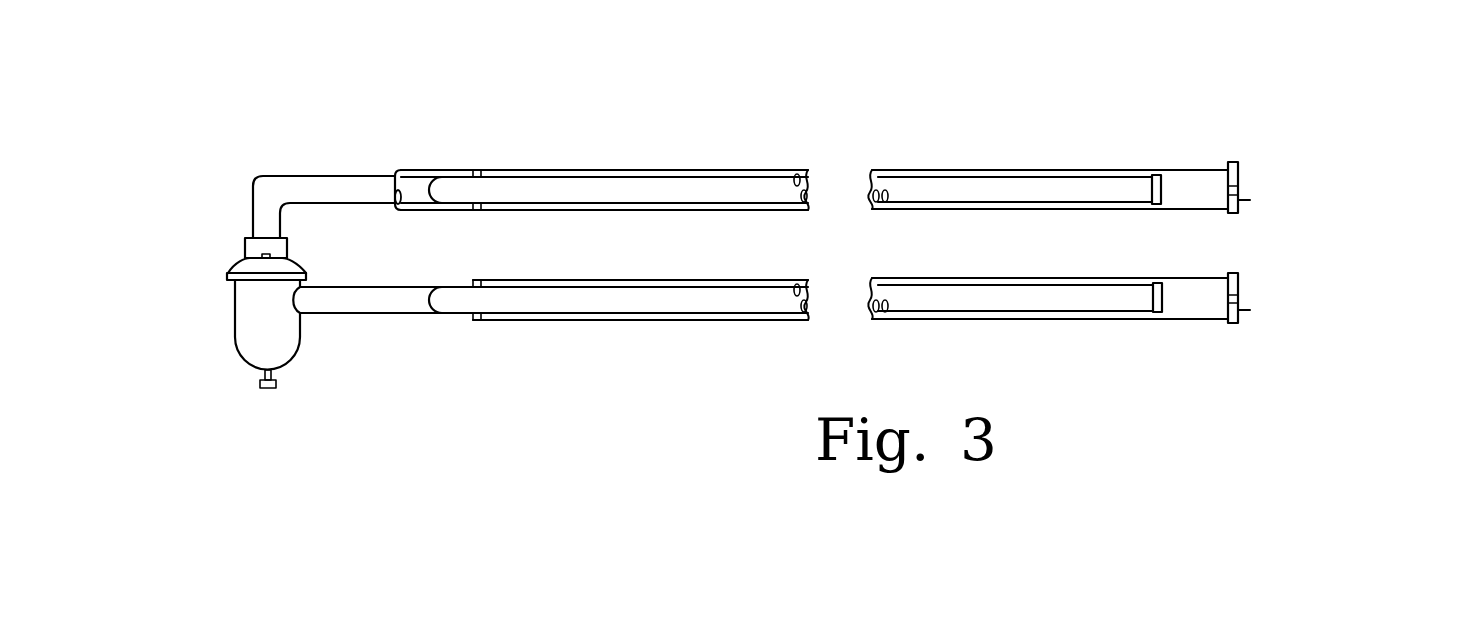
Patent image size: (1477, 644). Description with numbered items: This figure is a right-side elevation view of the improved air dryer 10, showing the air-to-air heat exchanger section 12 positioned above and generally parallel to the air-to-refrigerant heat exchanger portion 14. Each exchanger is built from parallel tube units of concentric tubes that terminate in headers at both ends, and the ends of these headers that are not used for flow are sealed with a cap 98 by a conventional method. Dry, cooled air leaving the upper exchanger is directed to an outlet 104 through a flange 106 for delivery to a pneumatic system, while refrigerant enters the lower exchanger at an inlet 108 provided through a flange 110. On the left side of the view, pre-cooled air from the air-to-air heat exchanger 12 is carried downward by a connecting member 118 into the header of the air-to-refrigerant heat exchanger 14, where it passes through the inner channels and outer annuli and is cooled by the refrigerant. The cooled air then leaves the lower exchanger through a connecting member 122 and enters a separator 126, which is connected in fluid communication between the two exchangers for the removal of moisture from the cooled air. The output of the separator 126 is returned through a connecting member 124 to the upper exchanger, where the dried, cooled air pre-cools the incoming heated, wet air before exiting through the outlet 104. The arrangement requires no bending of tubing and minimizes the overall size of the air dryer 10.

The improved air dryer 10 is at (1253, 97).
The air-to-air heat exchanger section 12 is at (632, 138).
The air-to-refrigerant heat exchanger portion 14 is at (700, 263).
The cap 98 is at (1162, 190).
The outlet 104 is at (1238, 200).
The flange 106 is at (1238, 170).
The inlet 108 is at (1238, 298).
The flange 110 is at (1238, 318).
The connecting member 118 is at (295, 176).
The connecting member 122 is at (365, 315).
The connecting member 124 is at (245, 258).
The separator 126 is at (235, 343).